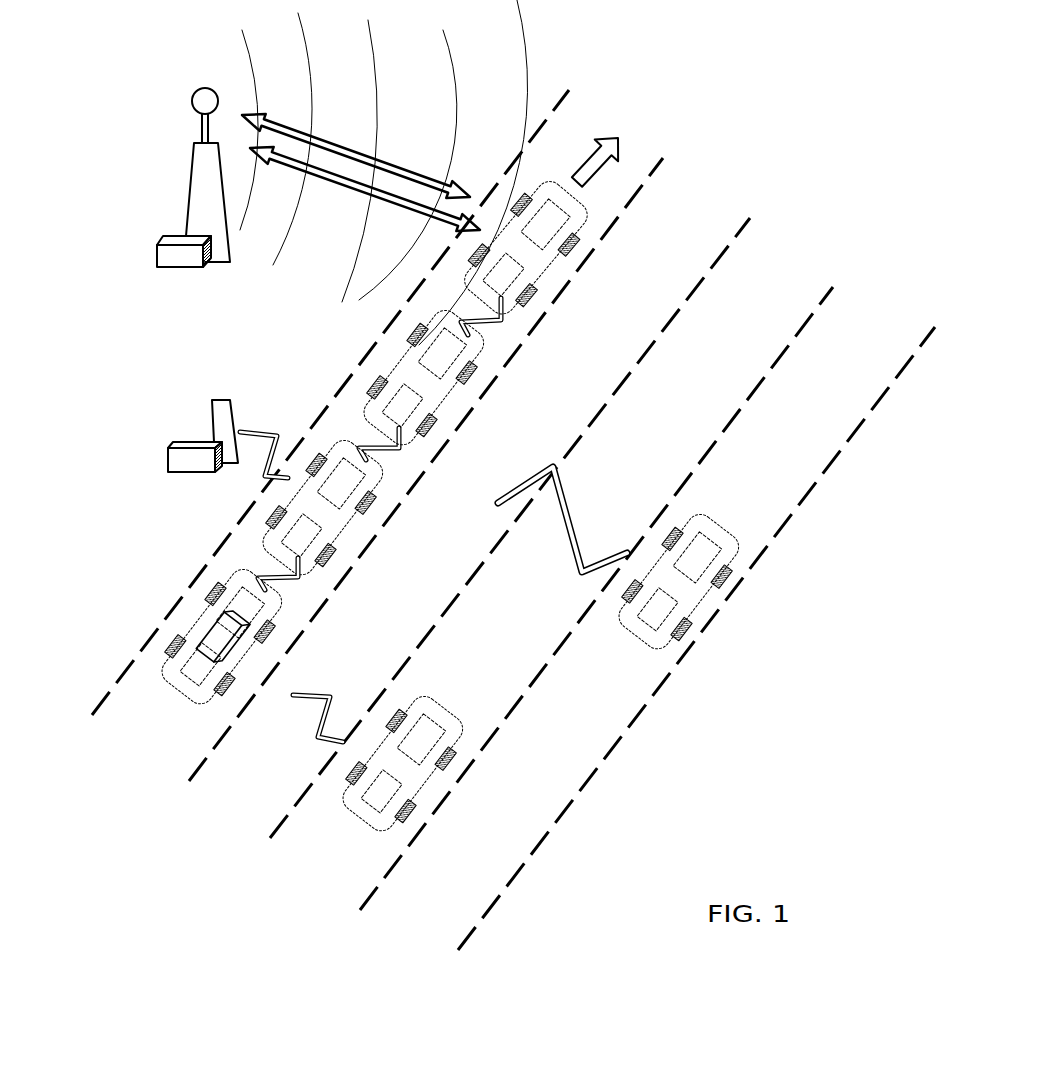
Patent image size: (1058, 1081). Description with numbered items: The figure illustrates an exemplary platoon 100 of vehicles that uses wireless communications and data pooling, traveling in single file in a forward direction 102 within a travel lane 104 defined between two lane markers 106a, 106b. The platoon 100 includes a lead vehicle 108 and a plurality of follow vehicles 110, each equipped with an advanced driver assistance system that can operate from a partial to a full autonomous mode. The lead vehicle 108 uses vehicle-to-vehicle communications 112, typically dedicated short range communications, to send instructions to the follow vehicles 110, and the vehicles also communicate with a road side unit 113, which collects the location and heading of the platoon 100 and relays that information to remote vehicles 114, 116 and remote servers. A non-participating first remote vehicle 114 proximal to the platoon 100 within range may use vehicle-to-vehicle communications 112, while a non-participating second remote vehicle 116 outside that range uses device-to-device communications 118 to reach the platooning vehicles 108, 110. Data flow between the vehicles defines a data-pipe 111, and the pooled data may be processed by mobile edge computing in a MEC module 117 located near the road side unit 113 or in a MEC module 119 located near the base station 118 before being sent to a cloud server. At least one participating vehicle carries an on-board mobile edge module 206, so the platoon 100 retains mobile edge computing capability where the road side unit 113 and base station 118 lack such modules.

The platoon 100 is at (632, 262).
The forward direction 102 is at (618, 148).
The travel lane 104 is at (598, 102).
The lane marker 106a is at (140, 655).
The lane marker 106b is at (207, 757).
The lead vehicle 108 is at (538, 256).
The follow vehicles 110 is at (322, 520).
The data-pipe 111 is at (283, 592).
The vehicle-to-vehicle (V2V) communications 112 is at (276, 436).
The road side unit 113 is at (210, 418).
The first remote vehicle 114 is at (395, 767).
The second remote vehicle 116 is at (675, 588).
The MEC module 117 is at (180, 457).
The base station 118 is at (207, 199).
The MEC module 119 is at (168, 258).
The mobile edge module 206 is at (217, 640).